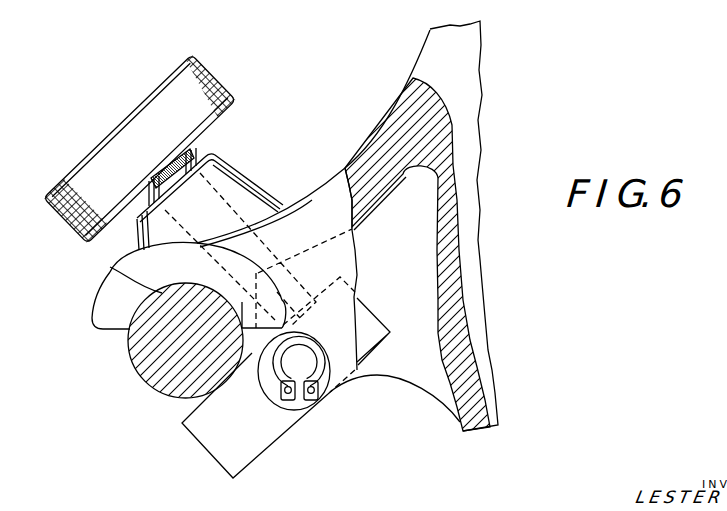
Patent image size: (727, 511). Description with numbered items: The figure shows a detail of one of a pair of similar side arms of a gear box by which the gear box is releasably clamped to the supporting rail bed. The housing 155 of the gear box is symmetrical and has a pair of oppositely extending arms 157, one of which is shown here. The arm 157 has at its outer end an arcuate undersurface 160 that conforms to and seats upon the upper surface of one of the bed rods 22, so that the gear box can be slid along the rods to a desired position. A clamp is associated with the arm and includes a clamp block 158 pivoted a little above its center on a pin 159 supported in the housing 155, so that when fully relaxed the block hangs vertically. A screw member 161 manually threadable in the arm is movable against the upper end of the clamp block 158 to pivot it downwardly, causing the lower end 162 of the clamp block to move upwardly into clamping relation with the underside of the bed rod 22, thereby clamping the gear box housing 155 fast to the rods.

The bed rod 22 is at (138, 372).
The housing 155 is at (440, 40).
The arm 157 is at (375, 132).
The clamp block 158 is at (358, 333).
The pin 159 is at (318, 375).
The arcuate undersurface 160 is at (112, 268).
The screw member 161 is at (205, 140).
The lower end 162 is at (227, 440).